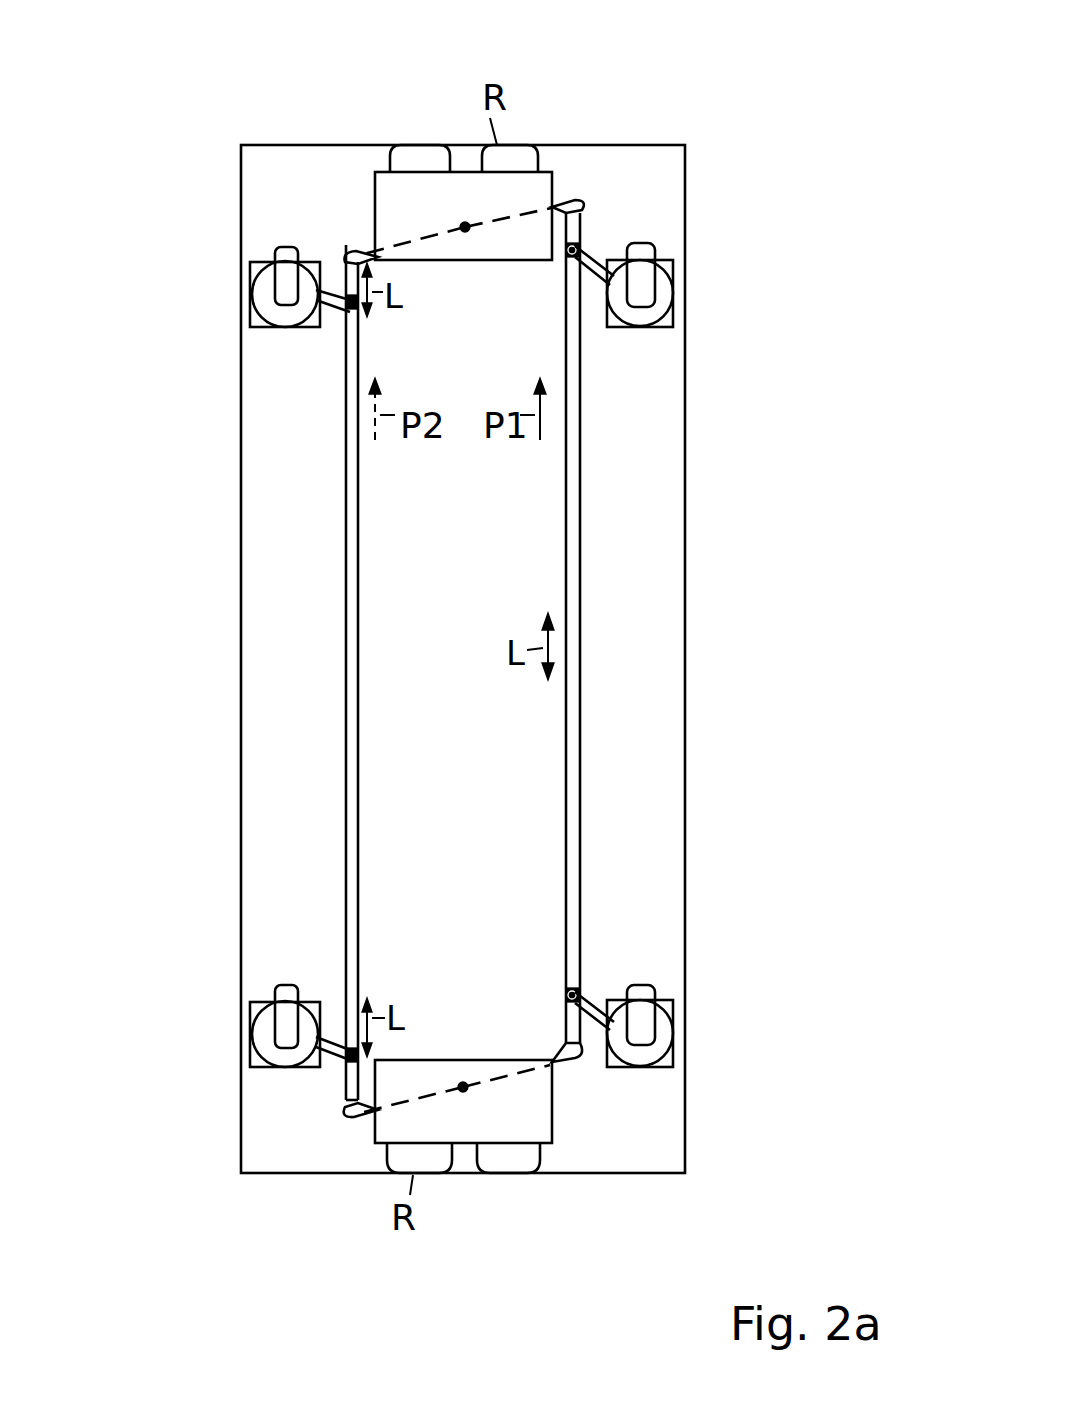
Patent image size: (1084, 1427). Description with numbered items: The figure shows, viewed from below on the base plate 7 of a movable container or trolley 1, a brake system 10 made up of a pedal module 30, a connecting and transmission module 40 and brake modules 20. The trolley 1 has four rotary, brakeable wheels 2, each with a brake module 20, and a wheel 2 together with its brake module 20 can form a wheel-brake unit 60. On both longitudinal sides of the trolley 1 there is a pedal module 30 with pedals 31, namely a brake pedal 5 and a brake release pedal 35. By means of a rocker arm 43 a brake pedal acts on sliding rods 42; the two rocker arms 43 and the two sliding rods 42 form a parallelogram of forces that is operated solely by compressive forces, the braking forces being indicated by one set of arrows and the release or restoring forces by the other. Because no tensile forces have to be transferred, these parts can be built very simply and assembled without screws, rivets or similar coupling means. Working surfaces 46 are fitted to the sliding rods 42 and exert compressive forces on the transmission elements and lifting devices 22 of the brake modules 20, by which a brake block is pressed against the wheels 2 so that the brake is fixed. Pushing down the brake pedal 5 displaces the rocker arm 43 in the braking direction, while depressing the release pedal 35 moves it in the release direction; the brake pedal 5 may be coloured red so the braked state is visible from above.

The movable container or trolley 1 is at (690, 548).
The wheel 2 is at (290, 293).
The brake pedal 5 is at (522, 145).
The base plate 7 is at (272, 575).
The brake system 10 is at (318, 204).
The brake module 20 is at (250, 270).
The lifting device 22 is at (660, 299).
The pedal module 30 is at (552, 172).
The pedal 31 is at (535, 150).
The brake release pedal 35 is at (415, 145).
The connecting and transmission module 40 is at (360, 707).
The sliding rod 42 is at (345, 770).
The rocker arm 43 is at (415, 237).
The working surface 46 is at (355, 302).
The wheel-brake unit 60 is at (258, 320).